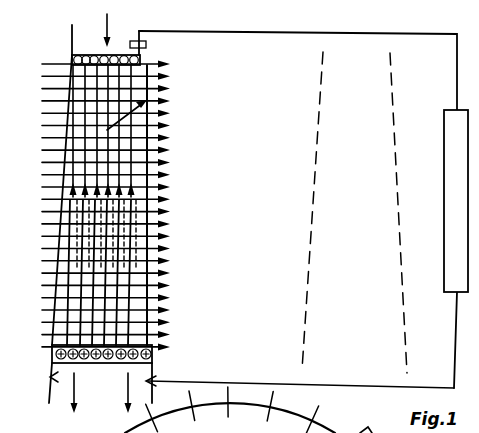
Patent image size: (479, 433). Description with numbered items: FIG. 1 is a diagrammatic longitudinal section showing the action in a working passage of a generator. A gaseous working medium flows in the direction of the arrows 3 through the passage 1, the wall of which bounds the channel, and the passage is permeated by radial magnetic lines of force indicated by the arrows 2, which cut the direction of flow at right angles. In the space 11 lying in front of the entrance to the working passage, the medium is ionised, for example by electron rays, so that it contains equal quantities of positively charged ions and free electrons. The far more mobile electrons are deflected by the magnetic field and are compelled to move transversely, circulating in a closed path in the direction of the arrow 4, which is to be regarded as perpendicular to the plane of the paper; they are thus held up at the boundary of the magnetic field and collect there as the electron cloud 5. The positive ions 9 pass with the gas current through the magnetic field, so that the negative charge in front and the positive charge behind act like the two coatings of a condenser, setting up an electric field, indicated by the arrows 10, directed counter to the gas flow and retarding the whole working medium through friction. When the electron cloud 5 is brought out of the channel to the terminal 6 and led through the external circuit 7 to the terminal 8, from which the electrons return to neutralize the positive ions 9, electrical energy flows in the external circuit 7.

The working passage 1 is at (57, 277).
The arrows indicating radial magnetic lines of force 2 is at (150, 235).
The arrows indicating direction of flow of working medium 3 is at (118, 8).
The arrow indicating direction of electron circulation 4 is at (134, 115).
The electron cloud 5 is at (72, 50).
The terminal 6 is at (147, 45).
The external circuit 7 is at (477, 62).
The terminal 8 is at (153, 377).
The positive ions 9 is at (55, 374).
The arrows indicating direction of electric field 10 is at (72, 213).
The space in front of working passage entrance 11 is at (106, 46).